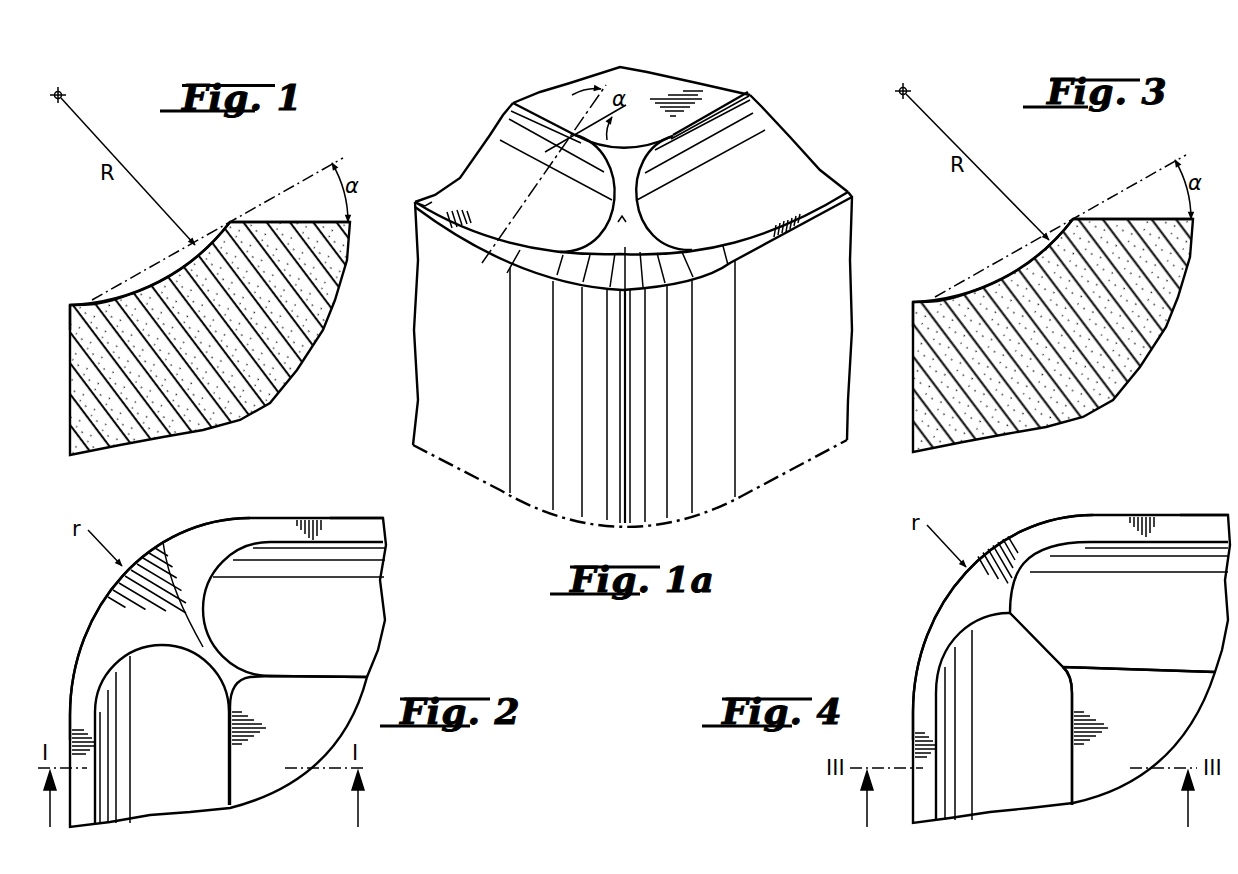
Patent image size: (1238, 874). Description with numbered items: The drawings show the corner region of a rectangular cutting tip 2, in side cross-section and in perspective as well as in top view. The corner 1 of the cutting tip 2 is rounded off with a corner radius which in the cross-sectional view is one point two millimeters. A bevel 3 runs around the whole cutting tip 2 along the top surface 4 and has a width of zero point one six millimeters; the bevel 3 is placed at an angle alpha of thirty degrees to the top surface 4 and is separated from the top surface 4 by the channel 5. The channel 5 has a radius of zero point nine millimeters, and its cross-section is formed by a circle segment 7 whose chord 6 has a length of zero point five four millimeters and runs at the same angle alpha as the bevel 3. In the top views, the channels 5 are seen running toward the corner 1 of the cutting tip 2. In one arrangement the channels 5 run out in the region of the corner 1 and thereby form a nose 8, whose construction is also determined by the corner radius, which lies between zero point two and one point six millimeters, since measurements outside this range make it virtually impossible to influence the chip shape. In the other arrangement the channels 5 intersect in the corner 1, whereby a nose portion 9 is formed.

In FIG. 1A, the corner 1 is at (677, 290).
In FIG. 2, the corner 1 is at (87, 611).
In FIG. 4, the corner 1 is at (932, 617).
In FIG. 1, the cutting tip 2 is at (66, 361).
In FIG. 3, the cutting tip 2 is at (1033, 349).
In FIG. 1A, the cutting tip 2 is at (549, 83).
In FIG. 2, the cutting tip 2 is at (265, 799).
In FIG. 4, the cutting tip 2 is at (1124, 789).
In FIG. 1, the bevel 3 is at (75, 304).
In FIG. 3, the bevel 3 is at (921, 285).
In FIG. 1A, the bevel 3 is at (423, 203).
In FIG. 2, the bevel 3 is at (82, 713).
In FIG. 4, the bevel 3 is at (920, 710).
In FIG. 1, the top surface 4 is at (285, 224).
In FIG. 3, the top surface 4 is at (1133, 187).
In FIG. 1A, the top surface 4 is at (710, 97).
In FIG. 2, the top surface 4 is at (301, 726).
In FIG. 4, the top surface 4 is at (1148, 724).
In FIG. 1, the channel 5 is at (108, 300).
In FIG. 3, the channel 5 is at (940, 269).
In FIG. 1A, the channel 5 is at (505, 162).
In FIG. 2, the channel 5 is at (313, 618).
In FIG. 4, the channel 5 is at (1145, 619).
In FIG. 1, the chord 6 is at (122, 296).
In FIG. 3, the chord 6 is at (958, 264).
In FIG. 1, the circle segment 7 is at (165, 278).
In FIG. 3, the circle segment 7 is at (1023, 251).
In FIG. 1A, the nose 8 is at (628, 221).
In FIG. 2, the nose 8 is at (163, 542).
In FIG. 4, the nose portion 9 is at (1008, 610).